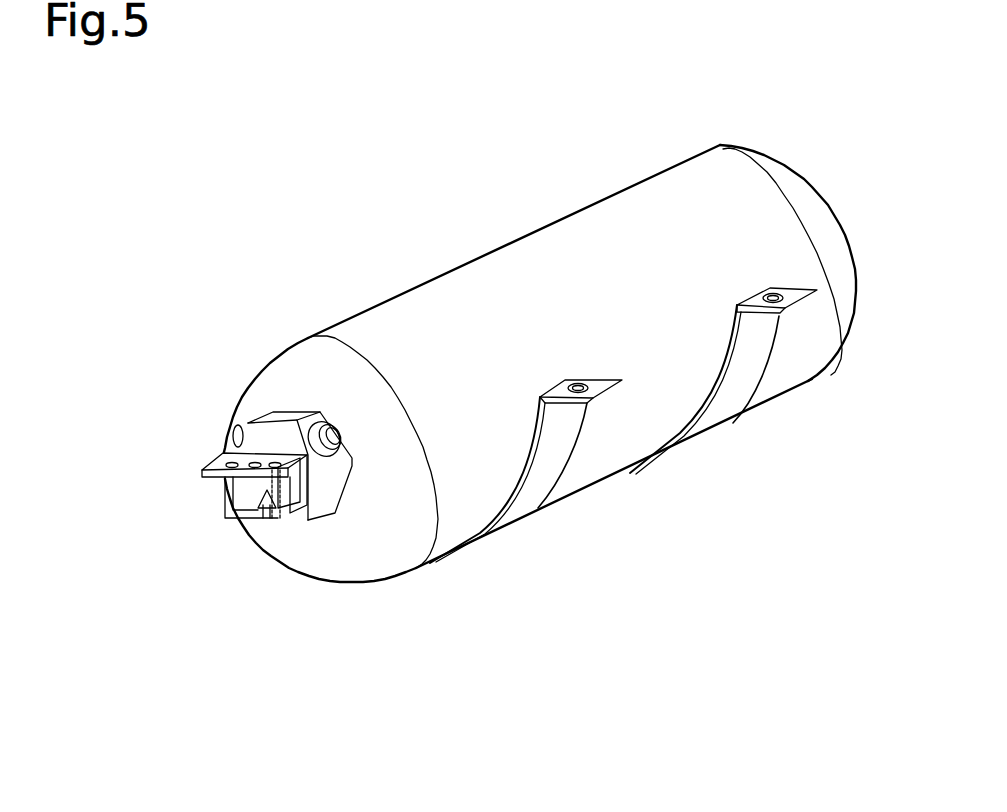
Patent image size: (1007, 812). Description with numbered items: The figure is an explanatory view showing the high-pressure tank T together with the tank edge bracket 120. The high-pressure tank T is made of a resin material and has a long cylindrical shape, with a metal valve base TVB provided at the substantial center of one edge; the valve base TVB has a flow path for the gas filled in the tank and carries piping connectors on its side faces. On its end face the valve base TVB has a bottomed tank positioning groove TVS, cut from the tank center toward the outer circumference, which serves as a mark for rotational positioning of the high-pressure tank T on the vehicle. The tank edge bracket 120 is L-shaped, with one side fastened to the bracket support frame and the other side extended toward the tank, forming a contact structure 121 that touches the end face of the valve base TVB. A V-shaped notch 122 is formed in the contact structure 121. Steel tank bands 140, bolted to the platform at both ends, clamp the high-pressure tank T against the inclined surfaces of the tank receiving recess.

The high-pressure tank T is at (665, 187).
The tank edge bracket 120 is at (237, 457).
The contact structure 121 is at (310, 487).
The V-shaped notch 122 is at (267, 517).
The tank positioning groove TVS is at (275, 520).
The valve base TVB is at (310, 517).
The tank bands 140 is at (528, 502).